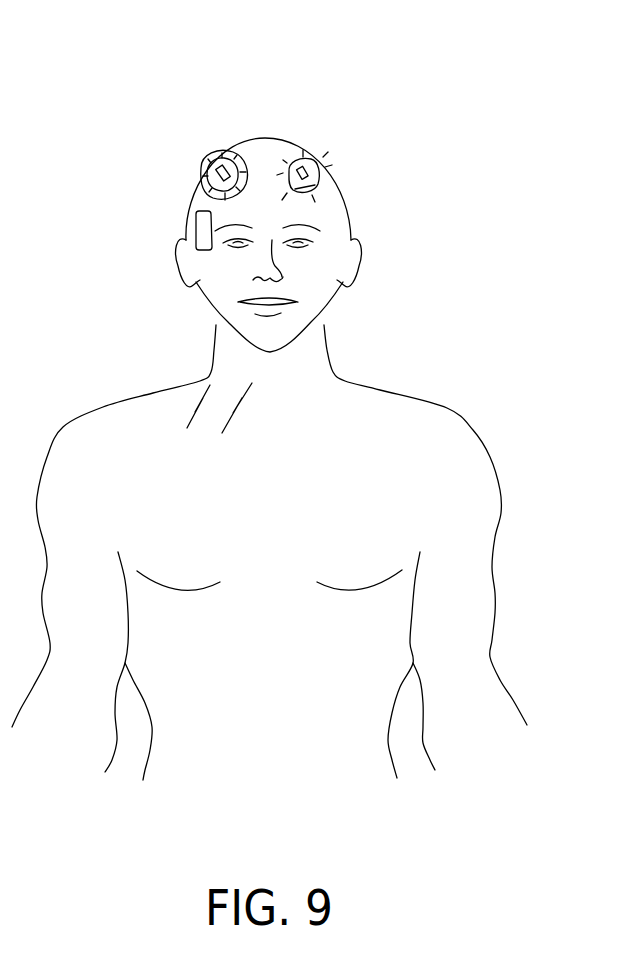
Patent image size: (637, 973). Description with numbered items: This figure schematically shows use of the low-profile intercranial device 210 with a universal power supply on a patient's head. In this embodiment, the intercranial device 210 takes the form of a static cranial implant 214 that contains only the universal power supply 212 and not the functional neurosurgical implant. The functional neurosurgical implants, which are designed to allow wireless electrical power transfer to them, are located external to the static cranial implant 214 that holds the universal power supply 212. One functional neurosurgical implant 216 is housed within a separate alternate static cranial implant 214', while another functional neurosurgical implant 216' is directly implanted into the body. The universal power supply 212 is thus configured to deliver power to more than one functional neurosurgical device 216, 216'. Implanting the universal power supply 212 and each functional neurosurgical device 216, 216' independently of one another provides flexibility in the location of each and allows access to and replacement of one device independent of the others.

The intercranial device 210 is at (247, 168).
The universal power supply 212 is at (227, 157).
The static cranial implant 214 is at (185, 137).
The alternate implant 214' is at (329, 128).
The functional neurosurgical implant 216 is at (375, 208).
The functional neurosurgical implant 216' is at (132, 251).